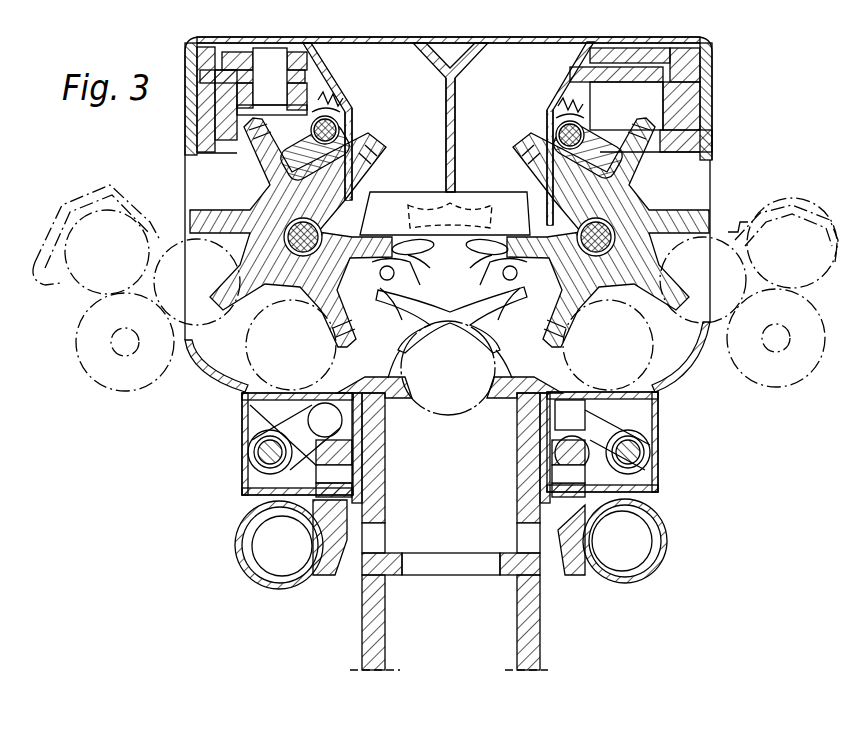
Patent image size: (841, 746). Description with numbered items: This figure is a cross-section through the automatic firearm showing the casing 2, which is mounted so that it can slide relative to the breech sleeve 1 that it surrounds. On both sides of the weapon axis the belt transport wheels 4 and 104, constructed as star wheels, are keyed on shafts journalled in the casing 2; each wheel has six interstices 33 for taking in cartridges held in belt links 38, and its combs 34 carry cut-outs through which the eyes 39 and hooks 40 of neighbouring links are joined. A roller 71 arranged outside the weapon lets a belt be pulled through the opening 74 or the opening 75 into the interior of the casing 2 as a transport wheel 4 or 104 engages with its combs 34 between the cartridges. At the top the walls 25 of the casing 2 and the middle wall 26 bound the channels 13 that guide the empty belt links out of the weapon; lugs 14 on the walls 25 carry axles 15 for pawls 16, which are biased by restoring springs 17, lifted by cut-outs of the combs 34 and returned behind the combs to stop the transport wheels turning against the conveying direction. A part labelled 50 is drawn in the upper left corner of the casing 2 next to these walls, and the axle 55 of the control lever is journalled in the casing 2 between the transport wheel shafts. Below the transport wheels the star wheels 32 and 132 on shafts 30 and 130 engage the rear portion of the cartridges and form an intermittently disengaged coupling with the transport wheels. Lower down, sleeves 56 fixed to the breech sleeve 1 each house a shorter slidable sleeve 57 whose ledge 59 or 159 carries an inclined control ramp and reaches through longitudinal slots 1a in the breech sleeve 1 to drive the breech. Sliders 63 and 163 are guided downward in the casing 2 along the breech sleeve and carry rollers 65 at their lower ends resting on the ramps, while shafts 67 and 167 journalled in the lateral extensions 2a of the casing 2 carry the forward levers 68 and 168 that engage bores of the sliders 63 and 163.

The breech sleeve 1 is at (370, 648).
The longitudinal slots 1a is at (528, 538).
The casing 2 is at (226, 40).
The lateral extensions of the casing 2a is at (246, 420).
The transport wheel 4 is at (634, 222).
The channels 13 is at (480, 82).
The lugs 14 is at (322, 86).
The axles 15 is at (336, 132).
The pawls 16 is at (312, 150).
The restoring springs 17 is at (336, 112).
The walls of the casing 25 is at (338, 94).
The middle wall 26 is at (446, 128).
The shaft 30 is at (512, 282).
The star wheel 32 is at (456, 365).
The interstices 33 is at (278, 197).
The combs 34 is at (636, 148).
The belt links 38 is at (770, 200).
The eyes 39 is at (738, 220).
The hooks 40 is at (720, 212).
The side block 50 is at (190, 115).
The axle 55 is at (272, 50).
The sleeves 56 is at (246, 523).
The shorter sleeve 57 is at (248, 541).
The ledge 59 is at (576, 560).
The slider 63 is at (548, 482).
The rollers 65 is at (338, 496).
The shaft 67 is at (646, 452).
The forward lever 68 is at (650, 412).
The roller 71 is at (148, 380).
The opening 74 is at (700, 178).
The opening 75 is at (184, 182).
The transport wheel 104 is at (268, 218).
The shaft 130 is at (448, 368).
The star wheel 132 is at (400, 340).
The ledge 159 is at (328, 560).
The slider 163 is at (345, 460).
The shaft 167 is at (256, 452).
The forward lever 168 is at (290, 425).